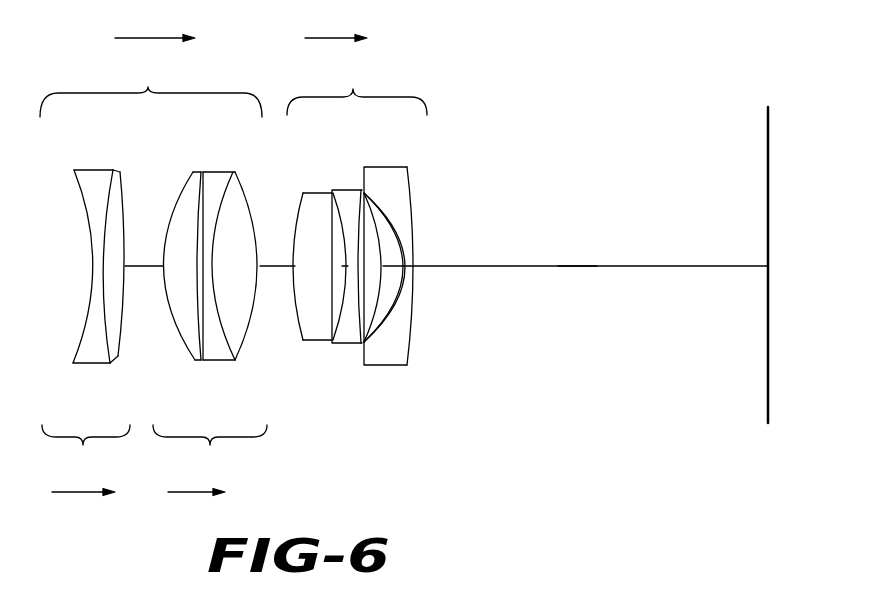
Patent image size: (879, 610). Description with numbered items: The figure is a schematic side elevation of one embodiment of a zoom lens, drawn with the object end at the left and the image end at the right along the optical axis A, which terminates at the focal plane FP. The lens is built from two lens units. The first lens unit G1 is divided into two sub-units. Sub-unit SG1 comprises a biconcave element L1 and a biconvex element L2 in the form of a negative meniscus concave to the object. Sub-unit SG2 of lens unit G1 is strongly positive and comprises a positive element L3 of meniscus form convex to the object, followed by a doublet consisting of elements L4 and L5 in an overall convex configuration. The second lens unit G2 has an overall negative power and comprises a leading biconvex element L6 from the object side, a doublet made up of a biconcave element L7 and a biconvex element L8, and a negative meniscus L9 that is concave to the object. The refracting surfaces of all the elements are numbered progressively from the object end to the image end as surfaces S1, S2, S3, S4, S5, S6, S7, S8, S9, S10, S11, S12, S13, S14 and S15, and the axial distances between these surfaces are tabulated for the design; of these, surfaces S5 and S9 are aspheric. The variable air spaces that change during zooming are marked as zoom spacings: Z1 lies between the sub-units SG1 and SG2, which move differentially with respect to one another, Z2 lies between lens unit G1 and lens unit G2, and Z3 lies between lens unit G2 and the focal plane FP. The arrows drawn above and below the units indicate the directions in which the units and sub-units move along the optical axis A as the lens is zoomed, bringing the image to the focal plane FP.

The biconcave element L1 is at (72, 264).
The biconvex element L2 is at (127, 271).
The positive element L3 is at (171, 254).
The doublet element L4 is at (212, 269).
The doublet element L5 is at (261, 265).
The leading biconvex element L6 is at (309, 270).
The biconcave element L7 is at (368, 269).
The biconvex element L8 is at (416, 234).
The negative meniscus L9 is at (421, 247).
The lens surface S1 is at (85, 307).
The lens surface S2 is at (103, 322).
The lens surface S3 is at (122, 346).
The lens surface S4 is at (167, 300).
The aspheric lens surface S5 is at (194, 336).
The lens surface S6 is at (203, 343).
The lens surface S7 is at (236, 343).
The lens surface S8 is at (252, 350).
The aspheric lens surface S9 is at (296, 310).
The lens surface S10 is at (340, 298).
The lens surface S11 is at (356, 340).
The lens surface S12 is at (358, 308).
The lens surface S13 is at (385, 286).
The lens surface S14 is at (402, 258).
The lens surface S15 is at (413, 230).
The first lens unit G1 is at (151, 89).
The second lens unit G2 is at (357, 88).
The first sub-unit SG1 is at (86, 448).
The second sub-unit SG2 is at (210, 448).
The zoom spacing Z1 is at (144, 253).
The zoom spacing Z2 is at (277, 253).
The zoom spacing Z3 is at (577, 255).
The optical axis A is at (703, 263).
The focal plane FP is at (769, 247).